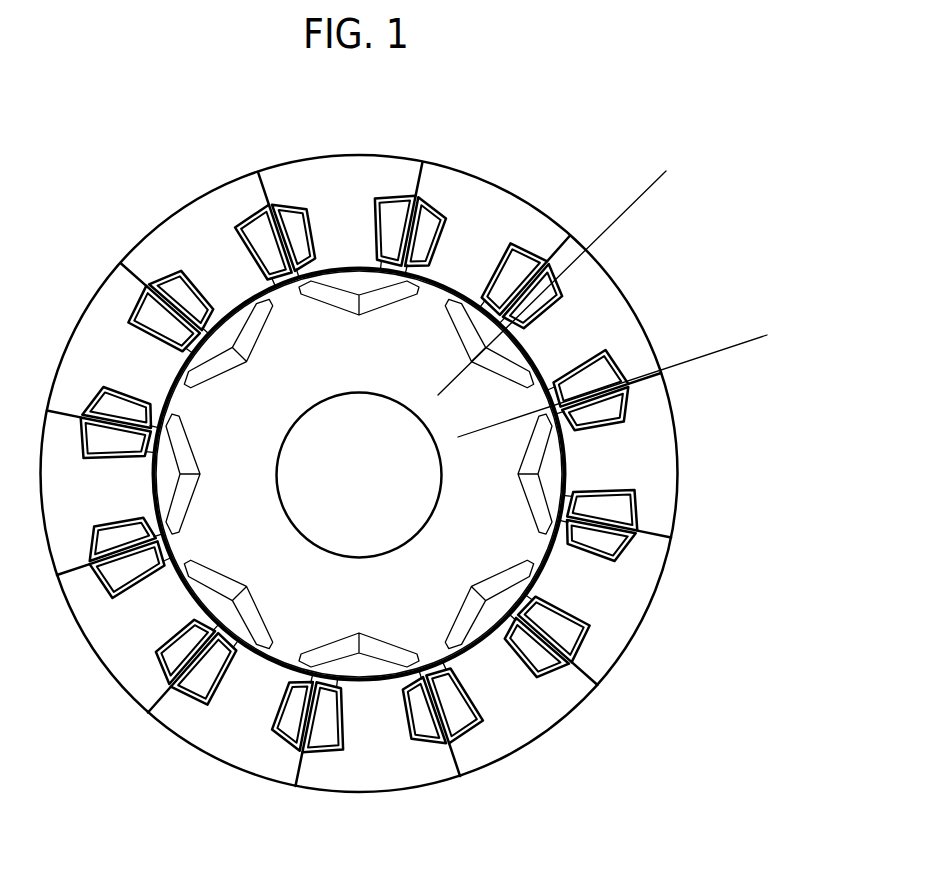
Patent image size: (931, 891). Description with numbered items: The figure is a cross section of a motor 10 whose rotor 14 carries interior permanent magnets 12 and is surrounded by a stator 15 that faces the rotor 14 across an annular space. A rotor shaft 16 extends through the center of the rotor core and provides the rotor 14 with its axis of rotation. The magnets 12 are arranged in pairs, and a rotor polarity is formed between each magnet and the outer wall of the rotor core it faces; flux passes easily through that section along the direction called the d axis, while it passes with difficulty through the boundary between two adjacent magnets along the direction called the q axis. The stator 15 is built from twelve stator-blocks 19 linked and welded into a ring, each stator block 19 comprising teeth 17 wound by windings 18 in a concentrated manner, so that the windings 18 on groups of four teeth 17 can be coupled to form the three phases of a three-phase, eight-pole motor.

The motor 10 is at (612, 242).
The interior permanent magnets 12 is at (538, 452).
The rotor 14 is at (538, 552).
The stator 15 is at (658, 410).
The rotor shaft 16 is at (376, 484).
The teeth 17 is at (562, 343).
The windings 18 is at (518, 270).
The stator-blocks 19 is at (445, 190).